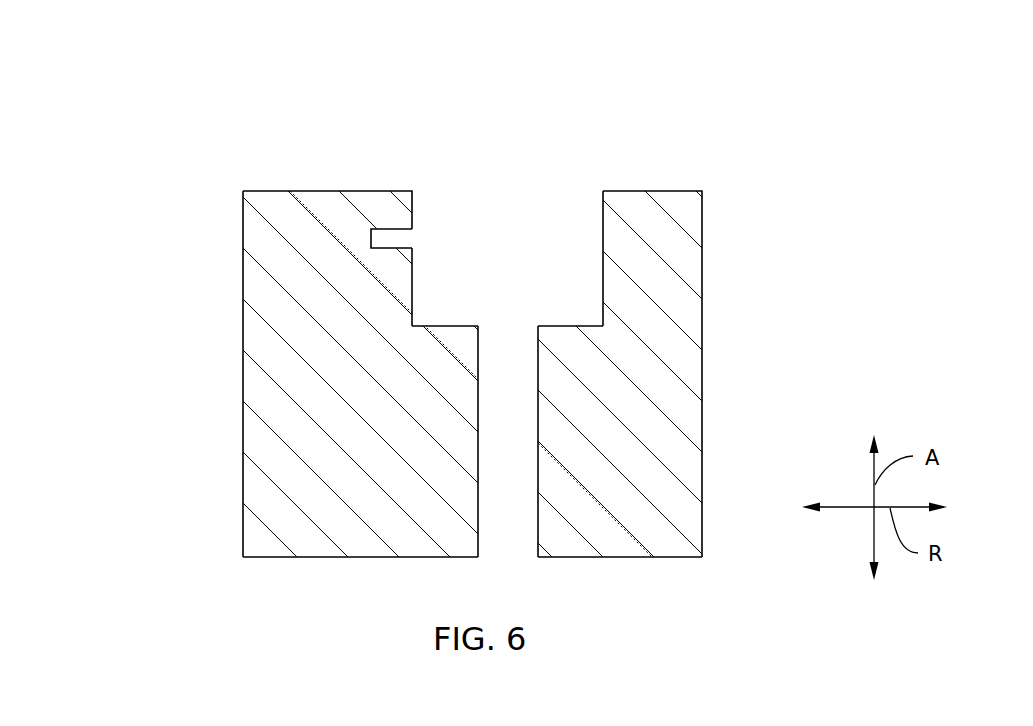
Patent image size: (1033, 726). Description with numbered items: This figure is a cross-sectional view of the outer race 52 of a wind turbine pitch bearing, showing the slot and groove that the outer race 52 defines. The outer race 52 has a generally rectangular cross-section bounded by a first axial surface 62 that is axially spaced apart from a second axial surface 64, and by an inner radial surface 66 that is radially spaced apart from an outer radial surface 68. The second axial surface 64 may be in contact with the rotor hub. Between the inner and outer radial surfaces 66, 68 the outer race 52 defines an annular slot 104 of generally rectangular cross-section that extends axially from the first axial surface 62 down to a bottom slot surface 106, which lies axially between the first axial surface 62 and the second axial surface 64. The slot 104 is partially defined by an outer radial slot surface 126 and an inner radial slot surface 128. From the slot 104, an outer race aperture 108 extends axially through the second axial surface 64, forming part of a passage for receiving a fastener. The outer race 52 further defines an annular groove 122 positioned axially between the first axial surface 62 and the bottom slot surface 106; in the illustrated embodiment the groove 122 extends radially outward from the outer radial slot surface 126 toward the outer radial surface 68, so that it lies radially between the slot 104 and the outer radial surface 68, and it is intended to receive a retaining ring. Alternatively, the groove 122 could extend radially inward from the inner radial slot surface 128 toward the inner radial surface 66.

The outer race 52 is at (144, 160).
The first axial surface 62 is at (313, 191).
The second axial surface 64 is at (362, 557).
The inner radial surface 66 is at (702, 412).
The outer radial surface 68 is at (243, 375).
The annular slot 104 is at (513, 196).
The bottom slot surface 106 is at (447, 326).
The outer race apertures 108 is at (500, 528).
The annular groove 122 is at (418, 232).
The outer radial slot surface 126 is at (413, 196).
The inner radial slot surface 128 is at (603, 220).